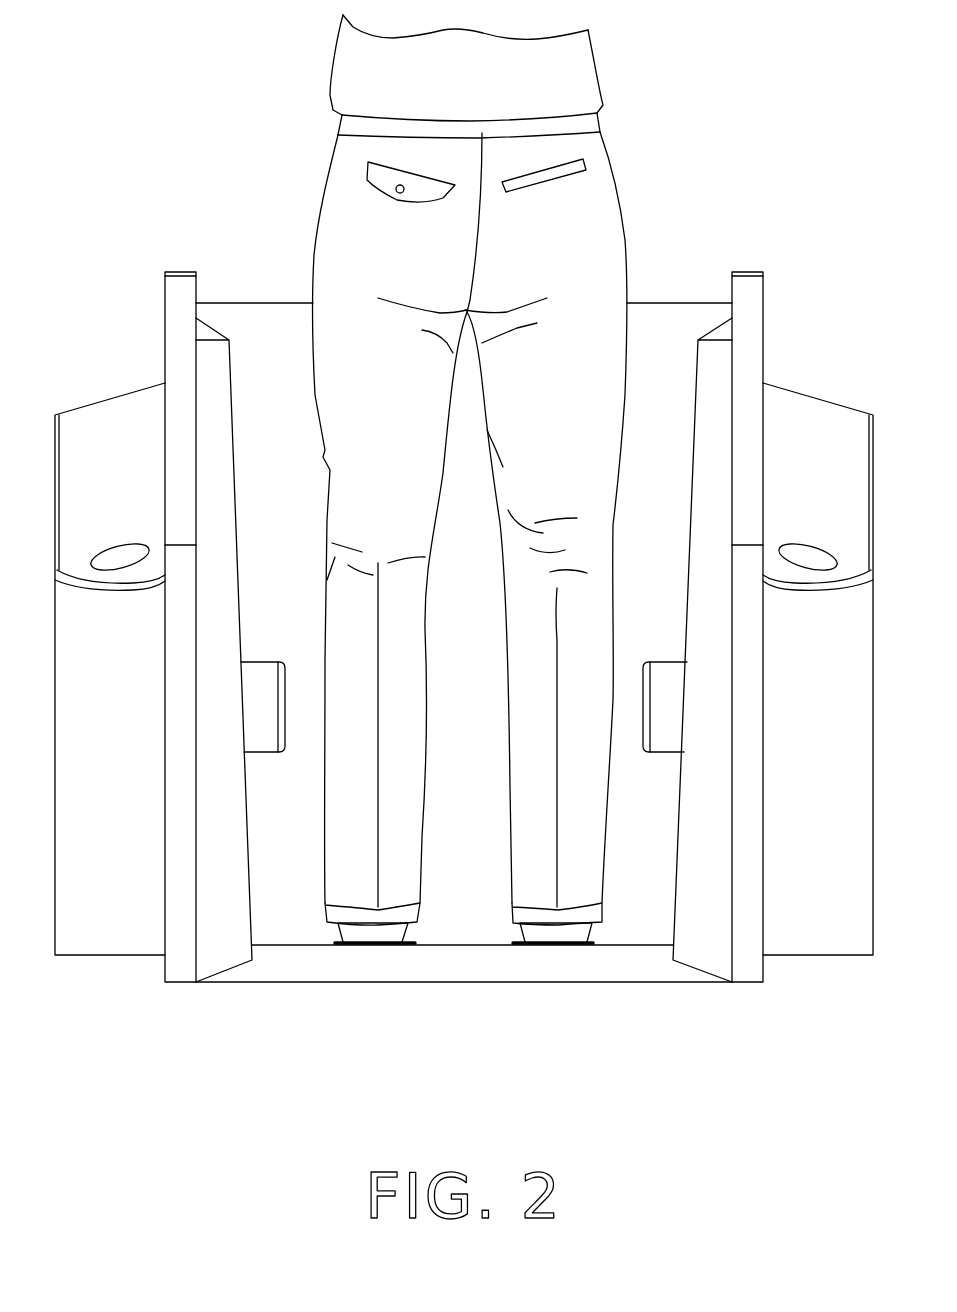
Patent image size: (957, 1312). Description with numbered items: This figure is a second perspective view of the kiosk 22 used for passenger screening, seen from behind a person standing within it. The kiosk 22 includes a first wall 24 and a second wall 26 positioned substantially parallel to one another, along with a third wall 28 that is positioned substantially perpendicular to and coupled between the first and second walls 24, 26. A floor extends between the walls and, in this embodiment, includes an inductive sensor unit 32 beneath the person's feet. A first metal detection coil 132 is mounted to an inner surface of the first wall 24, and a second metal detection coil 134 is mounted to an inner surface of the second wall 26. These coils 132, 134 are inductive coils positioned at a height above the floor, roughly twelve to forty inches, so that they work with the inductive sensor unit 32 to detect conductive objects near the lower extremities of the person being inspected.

The kiosk 22 is at (178, 335).
The first wall 24 is at (125, 738).
The second wall 26 is at (840, 738).
The third wall 28 is at (490, 735).
The inductive sensor unit 32 is at (288, 945).
The first metal detection coil 132 is at (302, 700).
The second metal detection coil 134 is at (625, 700).